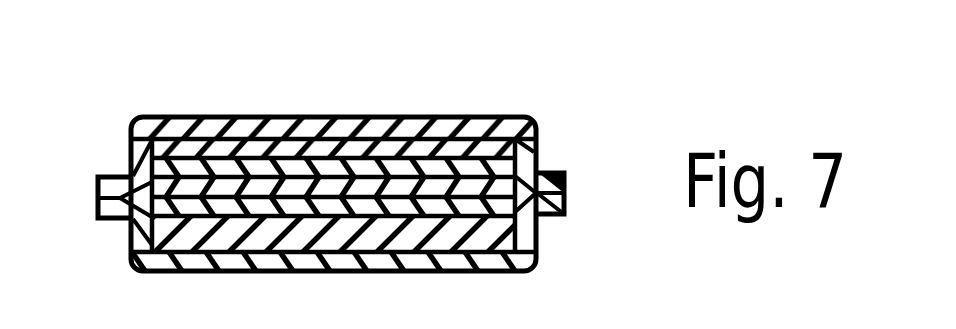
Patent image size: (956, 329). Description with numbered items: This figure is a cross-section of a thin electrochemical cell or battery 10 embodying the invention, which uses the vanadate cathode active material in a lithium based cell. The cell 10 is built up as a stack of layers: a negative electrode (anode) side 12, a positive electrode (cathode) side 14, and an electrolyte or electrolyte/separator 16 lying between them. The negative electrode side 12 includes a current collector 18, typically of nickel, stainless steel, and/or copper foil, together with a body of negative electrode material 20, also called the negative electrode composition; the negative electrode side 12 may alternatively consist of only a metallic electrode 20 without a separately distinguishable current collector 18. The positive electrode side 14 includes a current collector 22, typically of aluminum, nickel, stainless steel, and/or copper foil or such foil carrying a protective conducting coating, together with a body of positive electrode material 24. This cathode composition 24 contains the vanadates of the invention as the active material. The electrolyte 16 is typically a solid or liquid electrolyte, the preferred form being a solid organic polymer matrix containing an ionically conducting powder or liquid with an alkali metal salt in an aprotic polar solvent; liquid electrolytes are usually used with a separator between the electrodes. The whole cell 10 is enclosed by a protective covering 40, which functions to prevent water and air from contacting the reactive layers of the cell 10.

The electrochemical cell or battery 10 is at (329, 192).
The negative electrode (anode) side 12 is at (247, 121).
The positive electrode (cathode) side 14 is at (199, 272).
The electrolyte or electrolyte/separator 16 is at (537, 155).
The current collector 18 is at (428, 138).
The negative electrode material 20 is at (131, 170).
The current collector 22 is at (150, 243).
The positive electrode material 24 is at (518, 232).
The protective covering 40 is at (458, 258).